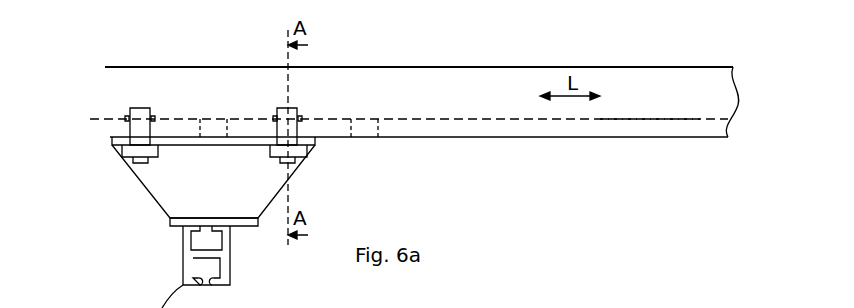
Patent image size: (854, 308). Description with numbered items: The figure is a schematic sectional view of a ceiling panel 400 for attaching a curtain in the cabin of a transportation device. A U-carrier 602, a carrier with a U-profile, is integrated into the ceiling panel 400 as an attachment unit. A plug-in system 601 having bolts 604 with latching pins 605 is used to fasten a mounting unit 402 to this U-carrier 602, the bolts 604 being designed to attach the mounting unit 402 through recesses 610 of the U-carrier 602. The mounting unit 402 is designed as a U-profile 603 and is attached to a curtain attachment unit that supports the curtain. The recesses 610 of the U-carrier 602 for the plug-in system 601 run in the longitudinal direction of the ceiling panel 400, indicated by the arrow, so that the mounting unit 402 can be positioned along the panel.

The ceiling panel 400 is at (647, 66).
The mounting unit 402 is at (133, 180).
The plug-in system 601 is at (137, 108).
The U-carrier 602 is at (445, 120).
The U-profile 603 is at (313, 140).
The bolts 604 is at (287, 162).
The latching pins 605 is at (125, 118).
The recesses 610 is at (207, 130).